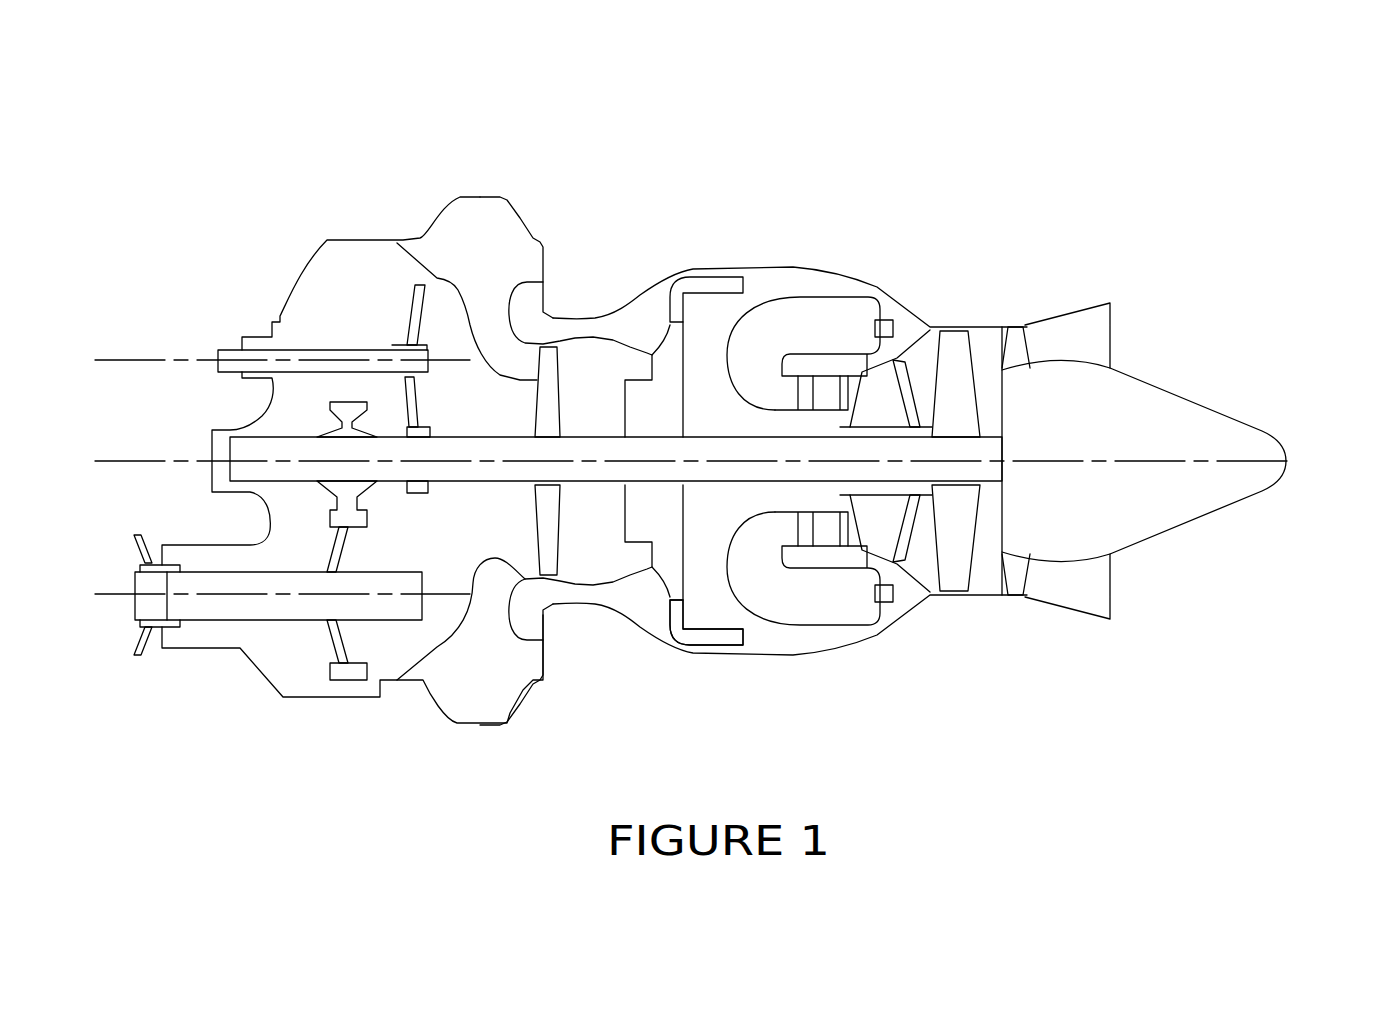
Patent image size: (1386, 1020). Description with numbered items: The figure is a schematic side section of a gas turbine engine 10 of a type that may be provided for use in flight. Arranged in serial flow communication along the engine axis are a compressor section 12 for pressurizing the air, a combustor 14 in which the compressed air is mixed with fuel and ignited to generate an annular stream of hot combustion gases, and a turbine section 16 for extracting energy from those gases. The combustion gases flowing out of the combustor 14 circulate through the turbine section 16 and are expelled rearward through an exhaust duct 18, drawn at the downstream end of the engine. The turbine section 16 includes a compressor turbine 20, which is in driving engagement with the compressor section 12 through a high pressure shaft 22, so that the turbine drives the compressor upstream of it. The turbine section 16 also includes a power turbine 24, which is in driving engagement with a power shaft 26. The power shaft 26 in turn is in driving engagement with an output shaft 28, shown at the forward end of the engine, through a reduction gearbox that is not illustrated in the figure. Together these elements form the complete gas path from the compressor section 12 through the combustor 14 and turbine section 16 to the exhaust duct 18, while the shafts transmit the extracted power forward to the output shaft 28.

The gas turbine engine 10 is at (1084, 204).
The compressor section 12 is at (653, 385).
The combustor 14 is at (802, 327).
The turbine section 16 is at (910, 548).
The exhaust duct 18 is at (1000, 345).
The compressor turbine 20 is at (870, 517).
The high pressure shaft 22 is at (730, 428).
The power turbine 24 is at (957, 355).
The power shaft 26 is at (470, 480).
The output shaft 28 is at (202, 607).